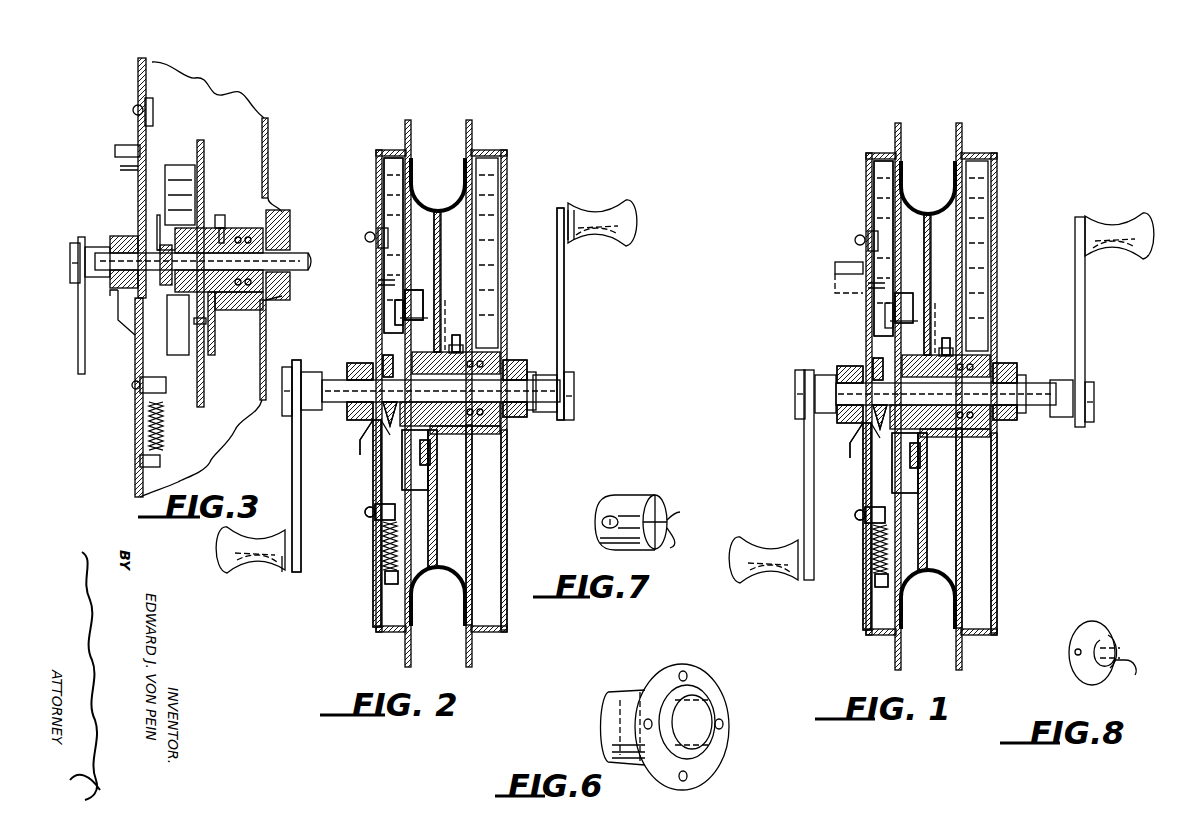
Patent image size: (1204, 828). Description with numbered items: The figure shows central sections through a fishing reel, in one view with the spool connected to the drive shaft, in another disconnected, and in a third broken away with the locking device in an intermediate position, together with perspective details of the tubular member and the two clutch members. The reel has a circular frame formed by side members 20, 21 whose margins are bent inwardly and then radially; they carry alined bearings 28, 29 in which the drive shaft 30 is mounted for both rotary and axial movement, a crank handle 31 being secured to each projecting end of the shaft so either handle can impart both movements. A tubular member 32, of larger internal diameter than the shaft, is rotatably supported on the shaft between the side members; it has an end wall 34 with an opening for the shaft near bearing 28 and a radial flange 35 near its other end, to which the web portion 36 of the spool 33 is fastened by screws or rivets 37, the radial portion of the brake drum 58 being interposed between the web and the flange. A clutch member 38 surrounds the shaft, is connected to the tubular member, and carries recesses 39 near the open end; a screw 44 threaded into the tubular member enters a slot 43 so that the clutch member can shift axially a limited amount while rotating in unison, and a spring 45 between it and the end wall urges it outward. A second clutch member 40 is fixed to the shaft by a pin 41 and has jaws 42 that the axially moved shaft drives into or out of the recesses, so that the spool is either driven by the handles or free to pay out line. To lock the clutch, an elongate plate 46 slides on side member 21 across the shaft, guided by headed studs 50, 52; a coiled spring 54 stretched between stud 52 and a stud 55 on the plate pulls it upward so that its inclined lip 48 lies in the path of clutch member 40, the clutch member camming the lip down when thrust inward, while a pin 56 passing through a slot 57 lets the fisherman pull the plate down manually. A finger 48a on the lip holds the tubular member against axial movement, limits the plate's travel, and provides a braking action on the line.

In FIG. 3, the side member 20 is at (270, 128).
In FIG. 2, the side member 20 is at (506, 195).
In FIG. 1, the side member 20 is at (964, 396).
In FIG. 3, the side member 21 is at (138, 82).
In FIG. 2, the side member 21 is at (377, 170).
In FIG. 1, the side member 21 is at (851, 248).
In FIG. 3, the bearing 28 is at (290, 228).
In FIG. 2, the bearing 28 is at (520, 350).
In FIG. 1, the bearing 28 is at (1028, 368).
In FIG. 3, the bearing 29 is at (113, 238).
In FIG. 2, the bearing 29 is at (348, 430).
In FIG. 1, the bearing 29 is at (820, 380).
In FIG. 3, the drive shaft 30 is at (298, 270).
In FIG. 2, the drive shaft 30 is at (340, 388).
In FIG. 1, the drive shaft 30 is at (944, 419).
In FIG. 3, the crank handle 31 is at (78, 318).
In FIG. 2, the crank handle 31 is at (298, 492).
In FIG. 1, the crank handle 31 is at (941, 398).
In FIG. 3, the tubular member 32 is at (238, 228).
In FIG. 2, the tubular member 32 is at (478, 350).
In FIG. 6, the tubular member 32 is at (620, 700).
In FIG. 1, the tubular member 32 is at (931, 461).
In FIG. 2, the spool 33 is at (432, 205).
In FIG. 1, the spool 33 is at (926, 206).
In FIG. 2, the end wall 34 is at (497, 452).
In FIG. 1, the end wall 34 is at (1014, 530).
In FIG. 2, the radial flange 35 is at (425, 455).
In FIG. 6, the radial flange 35 is at (712, 745).
In FIG. 1, the radial flange 35 is at (905, 481).
In FIG. 3, the web portion 36 is at (206, 158).
In FIG. 2, the web portion 36 is at (445, 298).
In FIG. 1, the web portion 36 is at (942, 285).
In FIG. 2, the screws or rivets 37 is at (445, 335).
In FIG. 1, the screws or rivets 37 is at (948, 318).
In FIG. 3, the clutch member 38 is at (213, 295).
In FIG. 2, the clutch member 38 is at (437, 445).
In FIG. 7, the clutch member 38 is at (628, 495).
In FIG. 1, the clutch member 38 is at (936, 501).
In FIG. 2, the recesses 39 is at (415, 448).
In FIG. 7, the recesses 39 is at (670, 545).
In FIG. 1, the recesses 39 is at (909, 453).
In FIG. 2, the clutch member 40 is at (383, 335).
In FIG. 1, the clutch member 40 is at (850, 355).
In FIG. 8, the clutch member 40 is at (1088, 635).
In FIG. 2, the pin 41 is at (352, 402).
In FIG. 1, the pin 41 is at (866, 417).
In FIG. 2, the jaws 42 is at (392, 427).
In FIG. 1, the jaws 42 is at (892, 441).
In FIG. 8, the jaws 42 is at (1135, 672).
In FIG. 2, the slot 43 is at (394, 311).
In FIG. 3, the screw 44 is at (220, 213).
In FIG. 2, the screw 44 is at (453, 348).
In FIG. 1, the screw 44 is at (945, 334).
In FIG. 3, the spring 45 is at (246, 292).
In FIG. 2, the spring 45 is at (470, 428).
In FIG. 1, the spring 45 is at (969, 528).
In FIG. 3, the elongate plate 46 is at (138, 360).
In FIG. 2, the elongate plate 46 is at (378, 317).
In FIG. 1, the elongate plate 46 is at (836, 474).
In FIG. 2, the inclined lip 48 is at (372, 440).
In FIG. 1, the inclined lip 48 is at (842, 438).
In FIG. 2, the finger 48a is at (414, 305).
In FIG. 3, the headed stud 50 is at (150, 110).
In FIG. 2, the headed stud 50 is at (372, 237).
In FIG. 1, the headed stud 50 is at (844, 239).
In FIG. 3, the headed stud 52 is at (136, 392).
In FIG. 2, the headed stud 52 is at (373, 515).
In FIG. 1, the headed stud 52 is at (852, 523).
In FIG. 3, the coiled spring 54 is at (165, 418).
In FIG. 2, the coiled spring 54 is at (373, 548).
In FIG. 1, the coiled spring 54 is at (854, 549).
In FIG. 3, the stud 55 is at (162, 460).
In FIG. 2, the stud 55 is at (373, 575).
In FIG. 1, the stud 55 is at (853, 585).
In FIG. 3, the pin 56 is at (118, 152).
In FIG. 1, the pin 56 is at (816, 273).
In FIG. 3, the slot 57 is at (135, 173).
In FIG. 2, the slot 57 is at (377, 292).
In FIG. 1, the slot 57 is at (840, 297).
In FIG. 3, the brake drum 58 is at (180, 168).
In FIG. 2, the brake drum 58 is at (412, 290).
In FIG. 1, the brake drum 58 is at (907, 289).